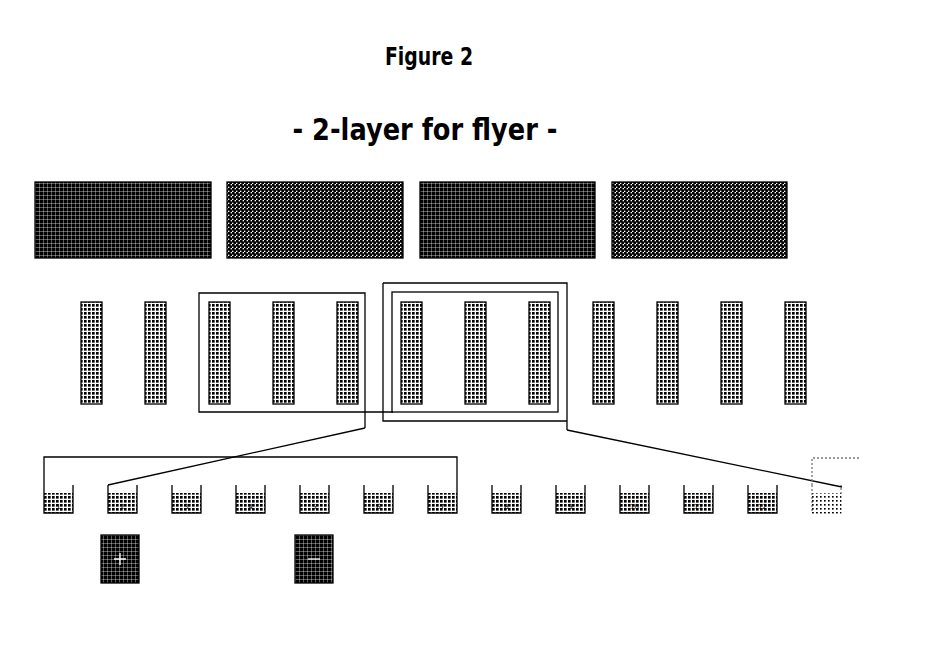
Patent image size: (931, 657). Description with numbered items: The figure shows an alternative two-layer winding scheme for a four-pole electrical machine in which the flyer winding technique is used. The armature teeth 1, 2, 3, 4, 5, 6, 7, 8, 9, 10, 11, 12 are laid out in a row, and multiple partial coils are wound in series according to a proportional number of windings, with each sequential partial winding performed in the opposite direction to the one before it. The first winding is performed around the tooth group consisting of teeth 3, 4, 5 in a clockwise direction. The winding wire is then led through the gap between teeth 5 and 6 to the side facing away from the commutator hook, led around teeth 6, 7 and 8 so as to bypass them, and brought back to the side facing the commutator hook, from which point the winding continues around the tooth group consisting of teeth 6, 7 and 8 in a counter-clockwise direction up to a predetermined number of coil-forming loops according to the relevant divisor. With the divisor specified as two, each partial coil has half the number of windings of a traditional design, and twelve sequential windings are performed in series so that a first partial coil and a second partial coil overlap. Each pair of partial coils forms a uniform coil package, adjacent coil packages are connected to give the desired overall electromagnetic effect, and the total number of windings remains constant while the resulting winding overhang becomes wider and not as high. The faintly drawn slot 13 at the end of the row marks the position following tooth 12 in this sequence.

The tooth 1 is at (91, 353).
The tooth 2 is at (155, 353).
The tooth 3 is at (219, 353).
The tooth 4 is at (283, 353).
The tooth 5 is at (347, 353).
The tooth 6 is at (411, 353).
The tooth 7 is at (475, 353).
The tooth 8 is at (539, 353).
The tooth 9 is at (603, 353).
The tooth 10 is at (667, 353).
The tooth 11 is at (731, 353).
The tooth 12 is at (795, 353).
The spare connector slot 13 is at (836, 485).